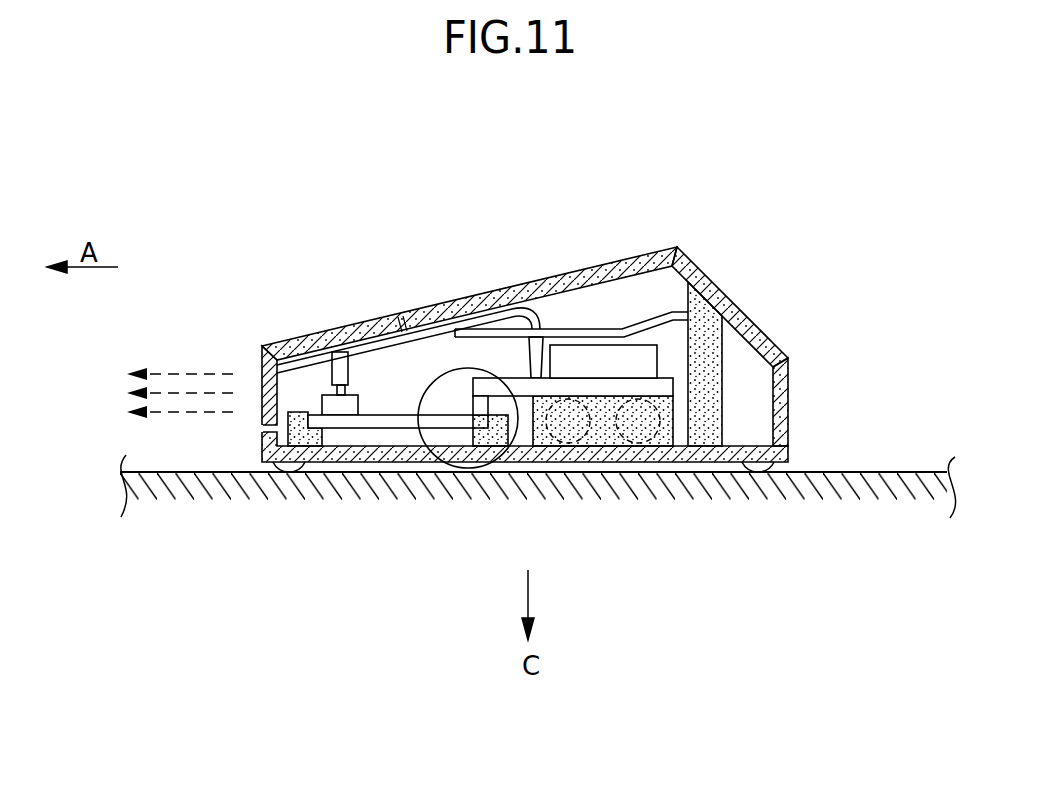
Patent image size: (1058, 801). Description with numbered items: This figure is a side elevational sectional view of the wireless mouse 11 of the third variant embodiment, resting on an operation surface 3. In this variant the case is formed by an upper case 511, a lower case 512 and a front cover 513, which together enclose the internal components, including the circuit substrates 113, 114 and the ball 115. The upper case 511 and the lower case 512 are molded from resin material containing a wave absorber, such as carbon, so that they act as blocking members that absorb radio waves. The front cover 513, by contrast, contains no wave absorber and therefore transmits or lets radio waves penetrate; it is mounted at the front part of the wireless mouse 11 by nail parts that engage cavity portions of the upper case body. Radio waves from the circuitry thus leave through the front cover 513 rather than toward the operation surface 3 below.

The wireless mouse 11 is at (270, 175).
The operation surface 3 is at (903, 494).
The upper case 511 is at (508, 282).
The lower case 512 is at (584, 468).
The front cover 513 is at (248, 417).
The circuit substrate 113 is at (350, 418).
The circuit substrate 114 is at (645, 385).
The ball 115 is at (440, 436).